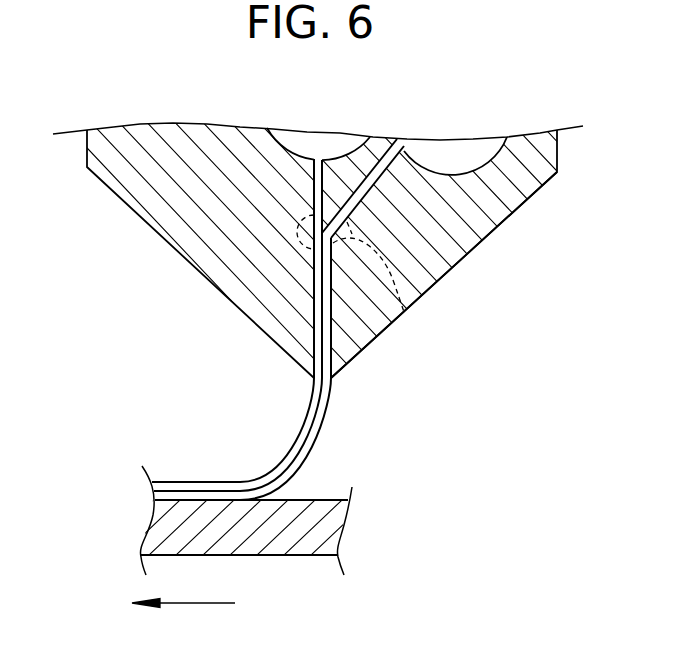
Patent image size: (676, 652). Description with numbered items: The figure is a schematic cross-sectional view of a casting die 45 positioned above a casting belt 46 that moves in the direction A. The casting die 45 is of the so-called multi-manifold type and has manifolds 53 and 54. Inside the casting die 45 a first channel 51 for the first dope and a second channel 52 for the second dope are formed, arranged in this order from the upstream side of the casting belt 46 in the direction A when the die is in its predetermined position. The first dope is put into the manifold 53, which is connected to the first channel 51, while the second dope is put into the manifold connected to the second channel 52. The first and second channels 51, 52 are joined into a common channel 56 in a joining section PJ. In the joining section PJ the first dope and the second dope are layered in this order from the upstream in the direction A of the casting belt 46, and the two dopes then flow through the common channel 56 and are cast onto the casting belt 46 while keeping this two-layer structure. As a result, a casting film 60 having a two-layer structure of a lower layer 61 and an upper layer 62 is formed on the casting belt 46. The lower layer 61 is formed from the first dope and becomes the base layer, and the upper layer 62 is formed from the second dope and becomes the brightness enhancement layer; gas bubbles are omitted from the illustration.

The casting die 45 is at (150, 232).
The casting belt 46 is at (297, 557).
The first channel 51 is at (473, 250).
The second channel 52 is at (313, 187).
The manifold 53 is at (472, 150).
The manifold 54 is at (323, 140).
The common channel 56 is at (382, 335).
The casting film 60 is at (155, 468).
The lower layer 61 is at (226, 490).
The upper layer 62 is at (189, 483).
The joining section PJ is at (410, 314).
The direction A is at (187, 622).